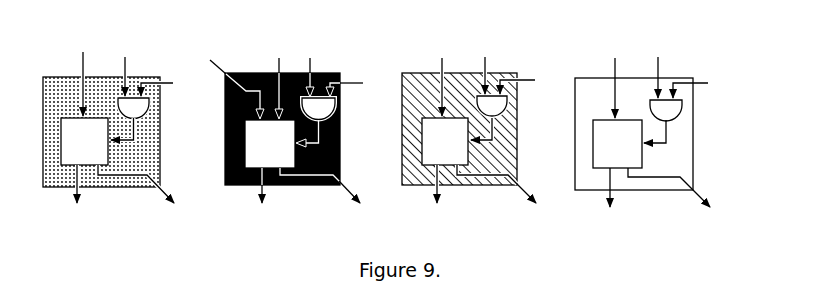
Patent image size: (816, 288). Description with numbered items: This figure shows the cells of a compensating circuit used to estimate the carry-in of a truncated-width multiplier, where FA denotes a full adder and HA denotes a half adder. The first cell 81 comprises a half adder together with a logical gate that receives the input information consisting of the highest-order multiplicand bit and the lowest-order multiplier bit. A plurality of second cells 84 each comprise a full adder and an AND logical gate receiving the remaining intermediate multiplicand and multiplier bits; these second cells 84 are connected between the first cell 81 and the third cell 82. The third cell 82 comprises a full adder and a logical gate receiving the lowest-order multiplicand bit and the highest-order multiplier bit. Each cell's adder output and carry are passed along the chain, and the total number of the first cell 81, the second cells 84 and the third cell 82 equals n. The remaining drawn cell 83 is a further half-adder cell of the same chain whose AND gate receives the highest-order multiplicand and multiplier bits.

The first cell 81 is at (104, 120).
The third cell 82 is at (287, 134).
The third (MSB) half-adder cell with AND gate, hatched 83 is at (466, 134).
The second cell 84 is at (655, 119).